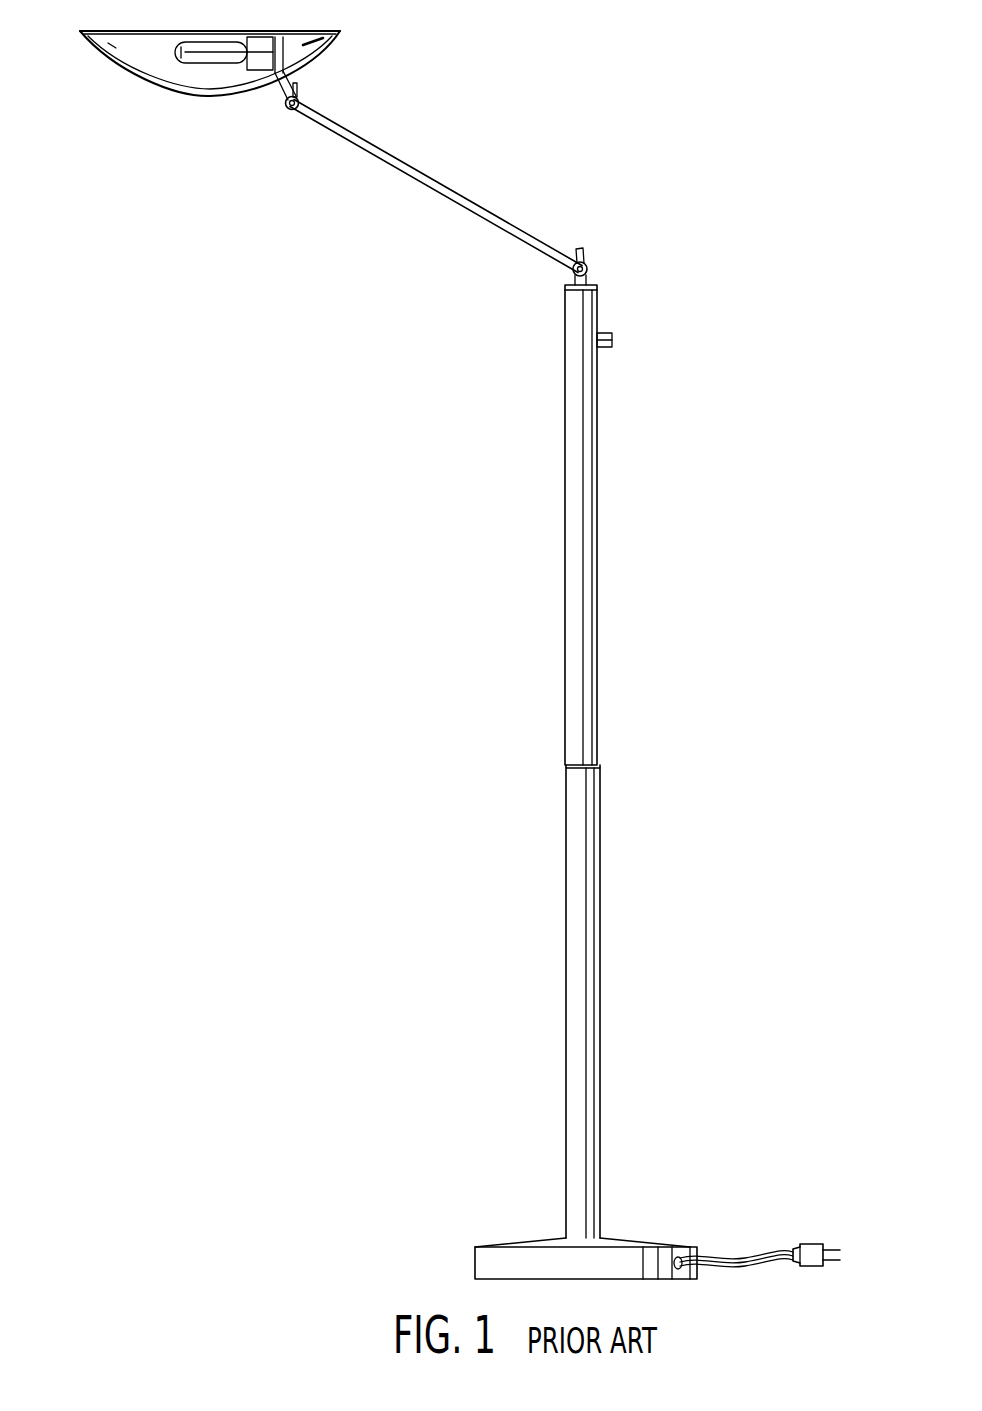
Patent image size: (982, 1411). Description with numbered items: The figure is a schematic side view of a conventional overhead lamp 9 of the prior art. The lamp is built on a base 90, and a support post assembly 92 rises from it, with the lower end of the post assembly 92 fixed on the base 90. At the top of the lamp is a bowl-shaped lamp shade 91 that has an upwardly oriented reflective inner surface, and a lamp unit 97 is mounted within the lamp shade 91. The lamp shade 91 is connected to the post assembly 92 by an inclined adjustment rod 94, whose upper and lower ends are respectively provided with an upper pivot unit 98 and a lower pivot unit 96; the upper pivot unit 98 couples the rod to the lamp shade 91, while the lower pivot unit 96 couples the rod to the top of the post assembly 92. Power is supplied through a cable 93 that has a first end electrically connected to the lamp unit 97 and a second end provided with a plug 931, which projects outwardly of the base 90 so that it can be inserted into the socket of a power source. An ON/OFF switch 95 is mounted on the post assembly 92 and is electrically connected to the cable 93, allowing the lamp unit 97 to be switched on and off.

The conventional overhead lamp 9 is at (559, 158).
The base 90 is at (647, 1246).
The bowl-shaped lamp shade 91 is at (142, 84).
The support post assembly 92 is at (590, 418).
The cable 93 is at (737, 1256).
The plug 931 is at (808, 1252).
The adjustment rod 94 is at (407, 162).
The ON/OFF switch 95 is at (608, 333).
The lower pivot unit 96 is at (590, 266).
The lamp unit 97 is at (262, 58).
The upper pivot unit 98 is at (300, 103).